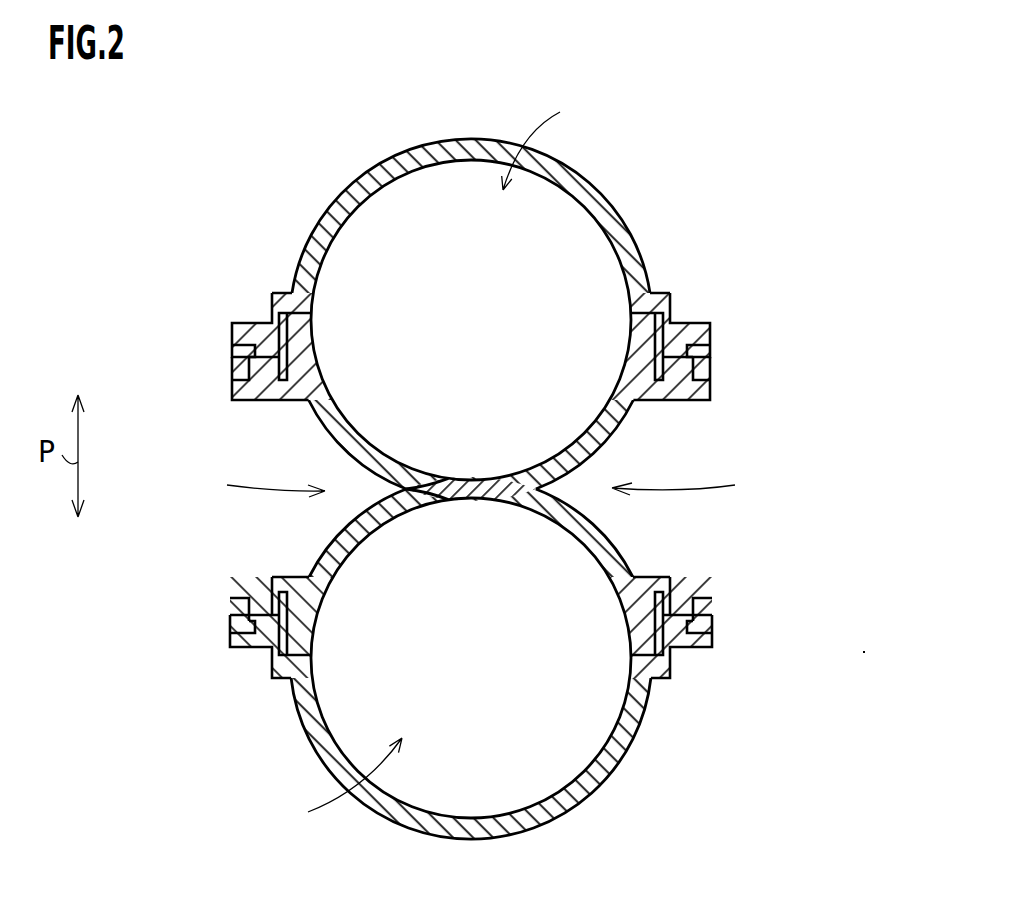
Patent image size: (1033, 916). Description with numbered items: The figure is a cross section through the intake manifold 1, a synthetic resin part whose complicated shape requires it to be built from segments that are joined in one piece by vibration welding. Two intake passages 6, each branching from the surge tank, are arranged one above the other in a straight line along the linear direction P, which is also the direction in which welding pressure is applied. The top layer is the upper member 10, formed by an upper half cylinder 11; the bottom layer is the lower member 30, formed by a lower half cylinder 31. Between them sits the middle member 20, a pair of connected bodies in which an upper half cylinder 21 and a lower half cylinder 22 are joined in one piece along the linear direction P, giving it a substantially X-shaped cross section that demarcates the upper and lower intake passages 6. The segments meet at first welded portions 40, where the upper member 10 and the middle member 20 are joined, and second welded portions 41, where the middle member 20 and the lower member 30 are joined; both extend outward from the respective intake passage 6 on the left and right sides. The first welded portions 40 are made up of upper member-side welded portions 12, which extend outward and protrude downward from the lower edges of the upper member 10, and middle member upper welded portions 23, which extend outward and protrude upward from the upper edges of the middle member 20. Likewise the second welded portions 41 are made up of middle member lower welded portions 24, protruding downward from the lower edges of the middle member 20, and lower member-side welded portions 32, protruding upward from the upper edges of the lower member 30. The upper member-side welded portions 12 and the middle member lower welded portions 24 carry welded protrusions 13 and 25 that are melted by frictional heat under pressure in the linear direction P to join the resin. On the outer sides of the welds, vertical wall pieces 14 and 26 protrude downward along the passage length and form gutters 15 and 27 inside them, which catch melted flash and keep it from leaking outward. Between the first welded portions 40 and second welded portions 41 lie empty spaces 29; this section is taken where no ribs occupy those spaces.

The intake manifold 1 is at (476, 461).
The intake passage 6 is at (428, 463).
The upper member 10 is at (578, 182).
The upper half cylinder 11 is at (610, 204).
The upper member-side welded portion 12 is at (683, 333).
The welded protrusion 13 is at (670, 347).
The vertical wall piece 14 is at (710, 368).
The gutter 15 is at (710, 352).
The middle member 20 is at (617, 425).
The upper half cylinder 21 is at (600, 448).
The lower half cylinder 22 is at (593, 525).
The middle member upper welded portion 23 is at (712, 400).
The middle member lower welded portion 24 is at (690, 590).
The welded protrusion 25 is at (662, 600).
The vertical wall piece 26 is at (712, 632).
The gutter 27 is at (712, 618).
The empty space 29 is at (478, 484).
The lower member 30 is at (598, 775).
The lower half cylinder 31 is at (574, 800).
The lower member-side welded portion 32 is at (682, 650).
The first welded portion 40 is at (481, 337).
The second welded portion 41 is at (456, 637).